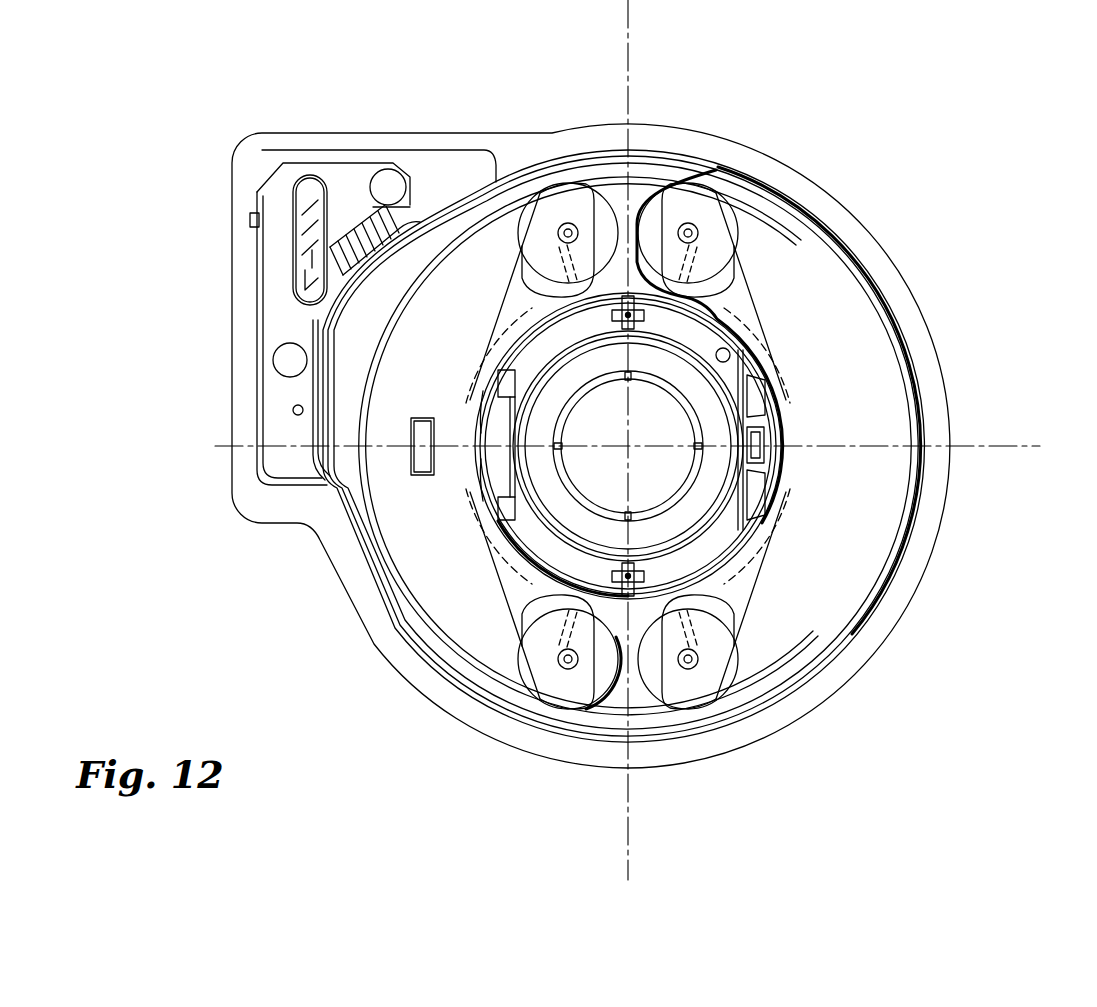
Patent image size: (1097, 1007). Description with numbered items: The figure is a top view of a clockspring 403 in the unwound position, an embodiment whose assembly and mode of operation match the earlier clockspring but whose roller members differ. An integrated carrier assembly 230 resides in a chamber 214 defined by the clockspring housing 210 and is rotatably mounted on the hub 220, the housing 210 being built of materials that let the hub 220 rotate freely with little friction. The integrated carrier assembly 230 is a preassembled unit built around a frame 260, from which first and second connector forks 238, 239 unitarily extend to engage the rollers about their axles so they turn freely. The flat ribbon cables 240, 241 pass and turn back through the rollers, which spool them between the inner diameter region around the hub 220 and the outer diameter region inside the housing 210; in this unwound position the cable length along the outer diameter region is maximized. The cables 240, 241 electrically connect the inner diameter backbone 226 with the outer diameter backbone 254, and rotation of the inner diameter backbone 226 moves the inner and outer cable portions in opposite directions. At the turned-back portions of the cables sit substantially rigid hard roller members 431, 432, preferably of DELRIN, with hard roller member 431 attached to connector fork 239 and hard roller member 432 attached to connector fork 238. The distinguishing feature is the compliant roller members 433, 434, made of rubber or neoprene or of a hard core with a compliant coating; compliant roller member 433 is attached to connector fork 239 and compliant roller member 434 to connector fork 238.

The clockspring housing 210 is at (943, 510).
The chamber 214 is at (810, 380).
The hub 220 is at (765, 506).
The inner diameter backbone 226 is at (505, 517).
The integrated carrier assembly 230 is at (770, 287).
The first connector fork 238 is at (588, 188).
The second connector fork 239 is at (535, 614).
The flat ribbon cable 240 is at (913, 423).
The flat ribbon cable 241 is at (917, 382).
The outer diameter backbone 254 is at (378, 222).
The frame 260 is at (747, 583).
The clockspring 403 is at (950, 435).
The hard roller member 431 is at (533, 680).
The hard roller member 432 is at (728, 213).
The compliant roller member 433 is at (727, 675).
The compliant roller member 434 is at (530, 213).